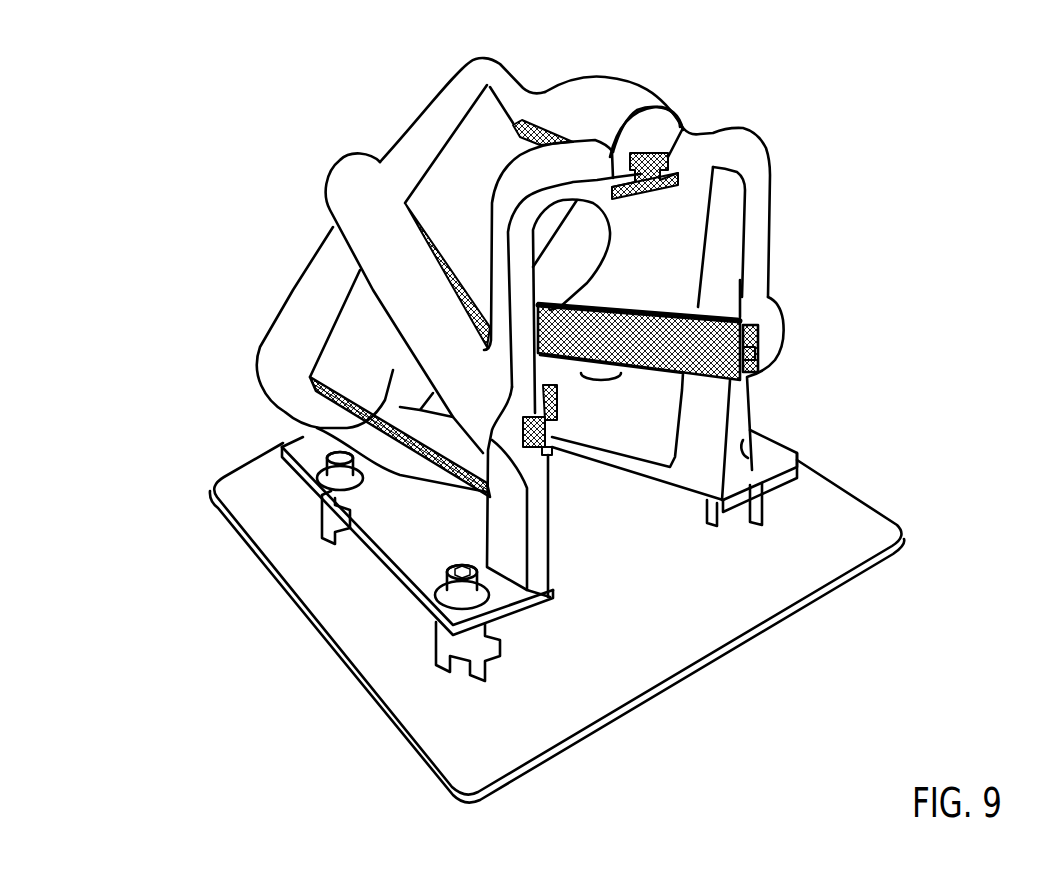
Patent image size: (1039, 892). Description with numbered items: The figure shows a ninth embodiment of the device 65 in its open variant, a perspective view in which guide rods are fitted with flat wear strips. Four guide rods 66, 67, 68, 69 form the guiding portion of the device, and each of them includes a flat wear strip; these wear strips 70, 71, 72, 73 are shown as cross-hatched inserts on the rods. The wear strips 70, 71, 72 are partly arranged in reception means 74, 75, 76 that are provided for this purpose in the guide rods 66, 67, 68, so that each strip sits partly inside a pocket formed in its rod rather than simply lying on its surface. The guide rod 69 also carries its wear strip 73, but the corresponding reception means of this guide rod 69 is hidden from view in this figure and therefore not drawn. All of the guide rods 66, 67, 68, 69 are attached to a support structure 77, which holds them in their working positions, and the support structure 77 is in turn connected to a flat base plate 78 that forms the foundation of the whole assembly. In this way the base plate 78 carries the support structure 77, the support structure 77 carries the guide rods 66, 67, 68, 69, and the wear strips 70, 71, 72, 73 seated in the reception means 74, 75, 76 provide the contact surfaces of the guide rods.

The device 65 is at (838, 142).
The guide rod 66 is at (773, 327).
The guide rod 67 is at (662, 116).
The guide rod 68 is at (397, 310).
The guide rod 69 is at (317, 427).
The wear strip 70 is at (753, 375).
The wear strip 71 is at (680, 188).
The wear strip 72 is at (553, 440).
The wear strip 73 is at (435, 468).
The reception means 74 is at (773, 360).
The reception means 75 is at (690, 121).
The reception means 76 is at (513, 443).
The support structure 77 is at (717, 413).
The base plate 78 is at (737, 623).